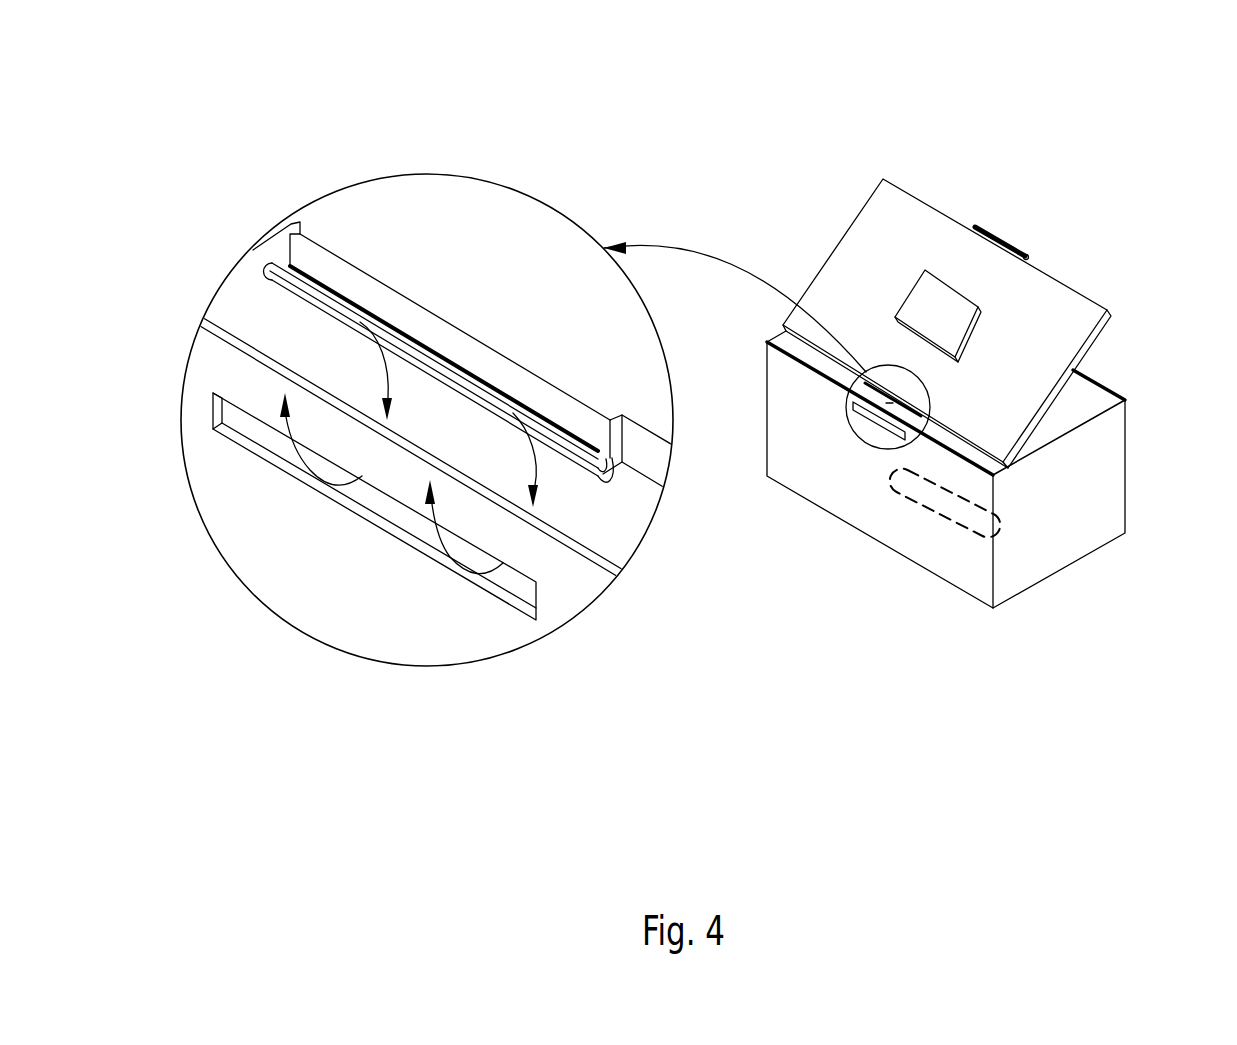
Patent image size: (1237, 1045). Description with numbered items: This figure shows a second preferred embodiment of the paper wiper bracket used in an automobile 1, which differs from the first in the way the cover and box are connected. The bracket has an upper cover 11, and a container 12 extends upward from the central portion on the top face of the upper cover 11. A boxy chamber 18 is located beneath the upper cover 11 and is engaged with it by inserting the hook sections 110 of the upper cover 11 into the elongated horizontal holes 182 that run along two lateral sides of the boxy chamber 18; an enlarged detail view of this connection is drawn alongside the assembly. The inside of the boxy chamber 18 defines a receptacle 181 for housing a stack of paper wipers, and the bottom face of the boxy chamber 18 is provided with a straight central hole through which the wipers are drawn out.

The paper wiper bracket used in an automobile 1 is at (986, 321).
The upper cover 11 is at (949, 314).
The container 12 is at (923, 303).
The hook sections 110 is at (316, 288).
The boxy chamber 18 is at (994, 461).
The receptacle 181 is at (1083, 397).
The elongated horizontal holes 182 is at (380, 507).